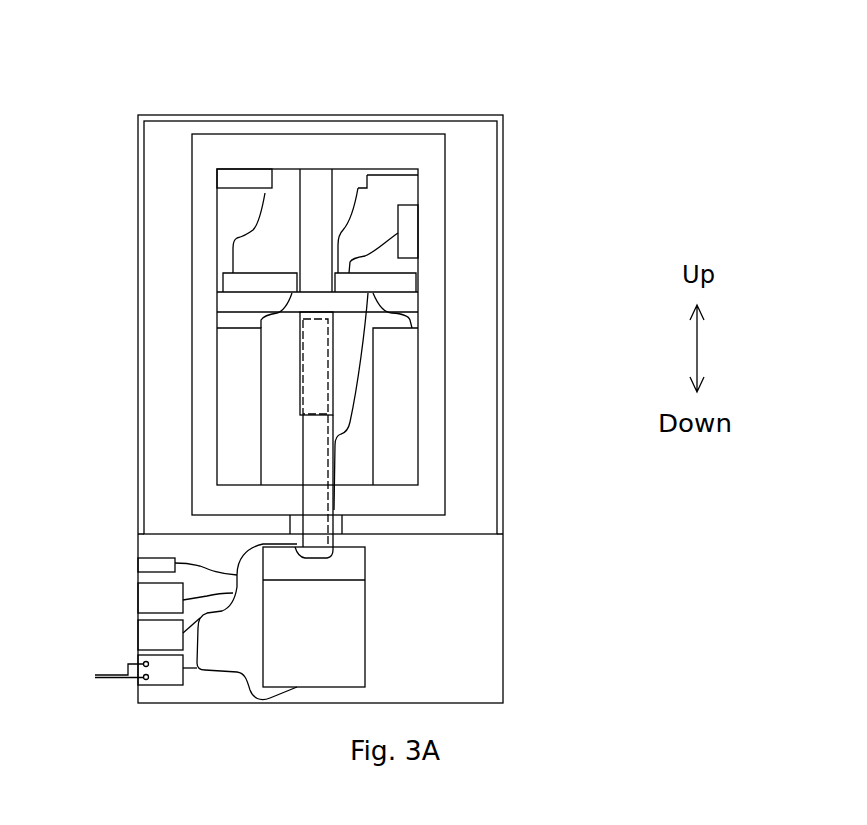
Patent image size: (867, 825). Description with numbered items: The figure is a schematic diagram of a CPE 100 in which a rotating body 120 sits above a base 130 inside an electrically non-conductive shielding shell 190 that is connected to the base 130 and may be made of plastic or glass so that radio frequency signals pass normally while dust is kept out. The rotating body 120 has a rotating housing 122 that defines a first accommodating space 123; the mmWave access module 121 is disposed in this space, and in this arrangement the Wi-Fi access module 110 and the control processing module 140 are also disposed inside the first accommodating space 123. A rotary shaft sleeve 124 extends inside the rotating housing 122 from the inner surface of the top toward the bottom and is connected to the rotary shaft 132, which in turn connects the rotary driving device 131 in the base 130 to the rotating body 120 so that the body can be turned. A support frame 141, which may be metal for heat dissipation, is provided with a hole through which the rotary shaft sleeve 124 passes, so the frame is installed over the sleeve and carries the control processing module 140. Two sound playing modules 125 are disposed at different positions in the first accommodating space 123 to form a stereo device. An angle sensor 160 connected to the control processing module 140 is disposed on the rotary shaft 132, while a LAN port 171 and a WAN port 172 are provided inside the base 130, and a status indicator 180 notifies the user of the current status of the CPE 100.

The CPE 100 is at (513, 130).
The Wi-Fi access module 110 is at (397, 172).
The rotating body 120 is at (447, 193).
The mmWave access module 121 is at (248, 173).
The rotating housing 122 is at (203, 210).
The first accommodating space 123 is at (283, 203).
The rotary shaft sleeve 124 is at (315, 185).
The sound playing module 125 is at (229, 405).
The base 130 is at (470, 607).
The rotary driving device 131 is at (340, 668).
The rotary shaft 132 is at (312, 465).
The control processing module 140 is at (227, 282).
The support frame 141 is at (412, 303).
The angle sensor 160 is at (337, 527).
The LAN port 171 is at (145, 605).
The WAN port 172 is at (145, 636).
The status indicator 180 is at (143, 568).
The electrically non-conductive shielding shell 190 is at (143, 147).